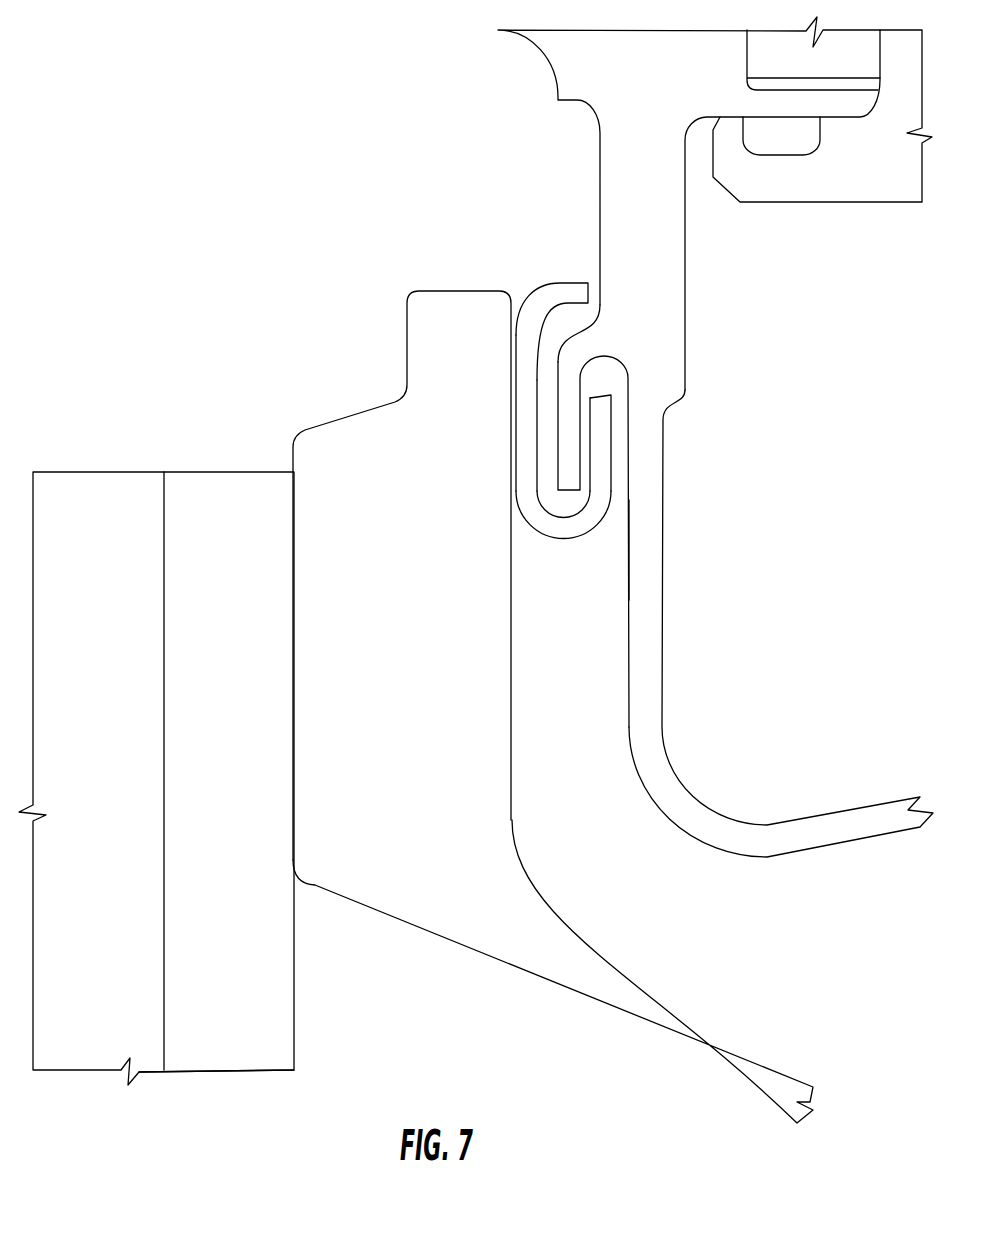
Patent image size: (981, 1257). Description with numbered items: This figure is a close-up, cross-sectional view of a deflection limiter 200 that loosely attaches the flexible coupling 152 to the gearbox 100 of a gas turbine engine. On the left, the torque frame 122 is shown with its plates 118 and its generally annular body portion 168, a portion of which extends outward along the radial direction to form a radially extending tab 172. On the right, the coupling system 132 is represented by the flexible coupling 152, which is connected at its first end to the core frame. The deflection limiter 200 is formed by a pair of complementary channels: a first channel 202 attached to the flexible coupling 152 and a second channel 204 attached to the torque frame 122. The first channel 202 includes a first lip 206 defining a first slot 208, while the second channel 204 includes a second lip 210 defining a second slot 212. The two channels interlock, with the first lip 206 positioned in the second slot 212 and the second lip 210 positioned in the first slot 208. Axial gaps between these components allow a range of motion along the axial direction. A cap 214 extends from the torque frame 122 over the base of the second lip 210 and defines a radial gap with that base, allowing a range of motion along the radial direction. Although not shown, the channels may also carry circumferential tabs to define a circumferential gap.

The gearbox 100 is at (175, 714).
The plates 118 is at (245, 1056).
The torque frame 122 is at (353, 907).
The coupling system 132 is at (715, 437).
The flexible coupling 152 is at (653, 623).
The body portion 168 is at (331, 705).
The radially extending tab 172 is at (442, 327).
The deflection limiter 200 is at (565, 401).
The first channel 202 is at (597, 343).
The second channel 204 is at (565, 530).
The first lip 206 is at (572, 425).
The first slot 208 is at (613, 515).
The second lip 210 is at (600, 478).
The second slot 212 is at (547, 472).
The cap 214 is at (562, 288).